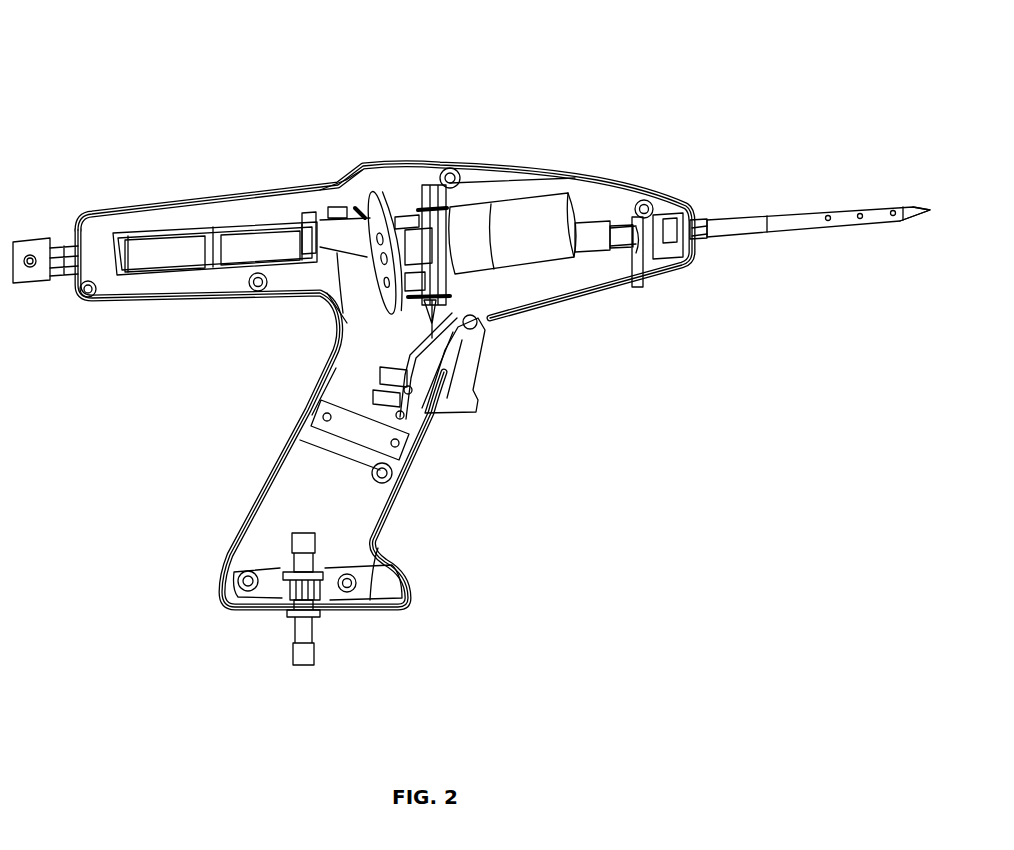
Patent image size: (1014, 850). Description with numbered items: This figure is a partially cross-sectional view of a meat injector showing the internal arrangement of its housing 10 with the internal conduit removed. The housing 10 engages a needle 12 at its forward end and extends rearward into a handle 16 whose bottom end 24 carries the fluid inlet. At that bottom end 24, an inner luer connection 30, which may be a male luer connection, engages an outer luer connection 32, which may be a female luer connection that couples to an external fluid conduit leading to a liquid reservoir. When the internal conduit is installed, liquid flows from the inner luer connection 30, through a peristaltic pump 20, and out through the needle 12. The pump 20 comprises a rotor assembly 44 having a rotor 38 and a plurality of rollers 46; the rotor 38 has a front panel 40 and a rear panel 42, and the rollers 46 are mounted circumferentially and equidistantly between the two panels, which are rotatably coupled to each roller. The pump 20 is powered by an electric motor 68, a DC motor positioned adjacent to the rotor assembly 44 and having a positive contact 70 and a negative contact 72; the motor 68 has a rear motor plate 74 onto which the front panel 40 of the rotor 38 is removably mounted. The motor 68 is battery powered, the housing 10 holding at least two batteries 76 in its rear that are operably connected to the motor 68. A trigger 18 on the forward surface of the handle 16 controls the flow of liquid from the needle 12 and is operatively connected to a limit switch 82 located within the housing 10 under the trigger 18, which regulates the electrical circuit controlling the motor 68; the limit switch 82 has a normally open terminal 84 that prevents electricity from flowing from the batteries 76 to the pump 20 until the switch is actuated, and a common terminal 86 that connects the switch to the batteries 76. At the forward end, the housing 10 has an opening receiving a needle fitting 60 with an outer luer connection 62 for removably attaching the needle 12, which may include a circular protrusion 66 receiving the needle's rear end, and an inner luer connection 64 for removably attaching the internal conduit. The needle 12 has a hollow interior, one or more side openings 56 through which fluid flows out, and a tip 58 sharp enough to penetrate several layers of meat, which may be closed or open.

The housing 10 is at (530, 172).
The needle 12 is at (766, 218).
The handle 16 is at (208, 447).
The trigger 18 is at (488, 343).
The pump 20 is at (393, 165).
The bottom end 24 is at (222, 580).
The inner luer connection 30 is at (308, 552).
The outer luer connection 32 is at (313, 635).
The rotor 38 is at (345, 190).
The front panel 40 is at (427, 170).
The rear panel 42 is at (372, 170).
The rotor assembly 44 is at (378, 297).
The rollers 46 is at (347, 181).
The openings 56 is at (827, 214).
The tip 58 is at (914, 206).
The needle fitting 60 is at (705, 250).
The outer luer connection 62 is at (663, 222).
The inner luer connection 64 is at (622, 230).
The circular protrusion 66 is at (702, 222).
The electric motor 68 is at (505, 272).
The positive contact 70 is at (577, 190).
The negative contact 72 is at (585, 262).
The rear motor plate 74 is at (452, 168).
The batteries 76 is at (250, 229).
The limit switch 82 is at (417, 413).
The normally open terminal 84 is at (372, 396).
The common terminal 86 is at (378, 375).